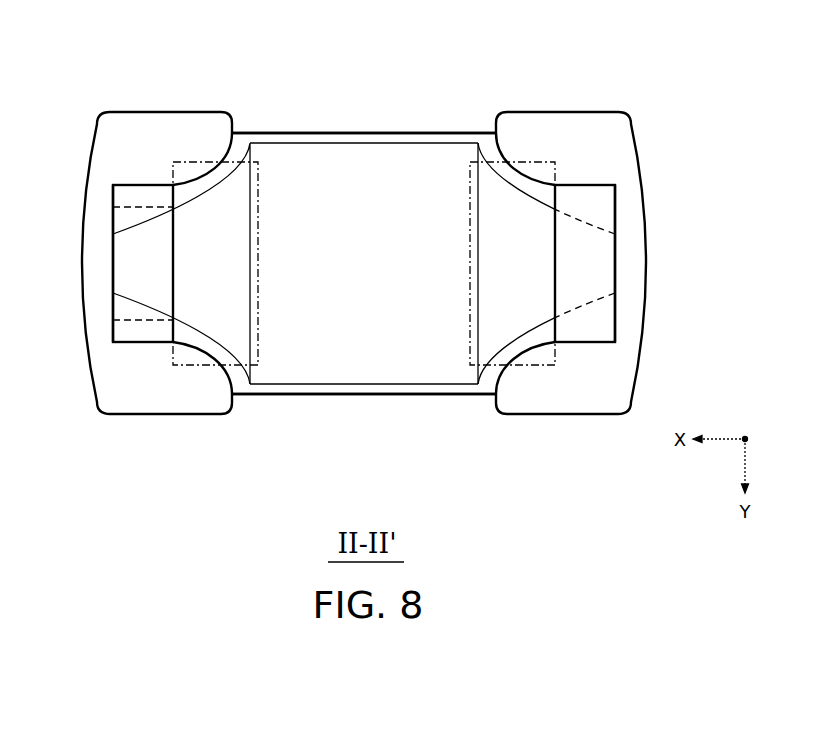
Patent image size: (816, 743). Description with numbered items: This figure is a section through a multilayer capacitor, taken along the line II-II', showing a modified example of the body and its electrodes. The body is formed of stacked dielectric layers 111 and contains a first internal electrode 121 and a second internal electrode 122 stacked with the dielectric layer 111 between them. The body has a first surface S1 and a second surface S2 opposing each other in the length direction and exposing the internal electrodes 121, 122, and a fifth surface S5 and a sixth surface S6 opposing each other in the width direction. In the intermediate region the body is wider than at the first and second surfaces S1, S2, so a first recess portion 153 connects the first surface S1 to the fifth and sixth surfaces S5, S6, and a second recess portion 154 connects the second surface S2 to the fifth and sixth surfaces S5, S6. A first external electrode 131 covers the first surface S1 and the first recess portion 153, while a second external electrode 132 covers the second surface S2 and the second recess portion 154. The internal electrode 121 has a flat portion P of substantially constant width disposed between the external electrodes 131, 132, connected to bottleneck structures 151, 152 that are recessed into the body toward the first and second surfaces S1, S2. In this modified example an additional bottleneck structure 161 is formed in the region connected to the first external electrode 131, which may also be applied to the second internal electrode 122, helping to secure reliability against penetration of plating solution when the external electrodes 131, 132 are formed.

The dielectric layer 111 is at (289, 142).
The first internal electrode 121 is at (316, 363).
The first external electrode 131 is at (157, 126).
The second external electrode 132 is at (568, 126).
The bottleneck structure 151 is at (233, 366).
The bottleneck structure 152 is at (497, 366).
The first recess portion 153 is at (200, 175).
The second recess portion 154 is at (525, 172).
The additional bottleneck structure 161 is at (132, 320).
The second internal electrode 122 is at (587, 285).
The flat portion P is at (337, 141).
The first surface S1 is at (113, 330).
The second surface S2 is at (616, 330).
The fifth surface S5 is at (396, 132).
The sixth surface S6 is at (396, 395).